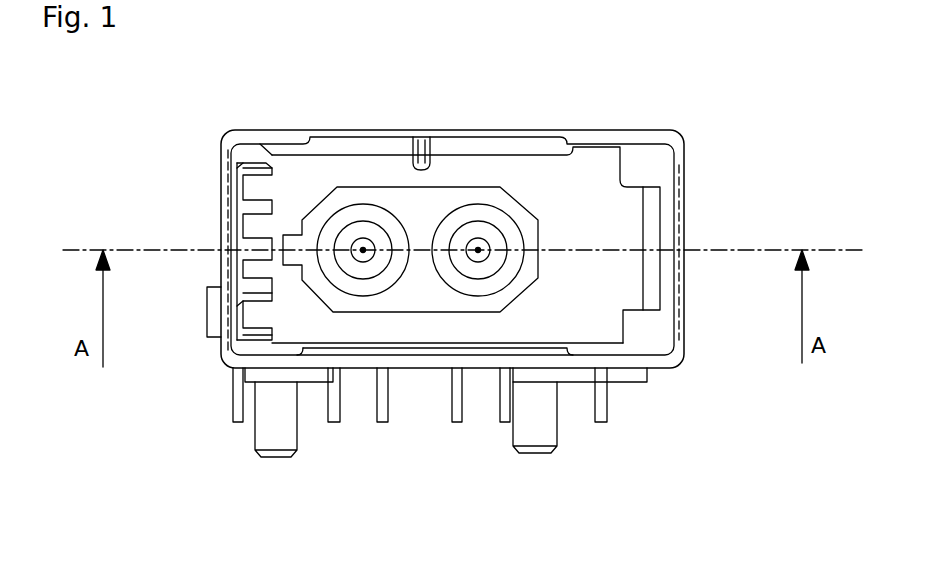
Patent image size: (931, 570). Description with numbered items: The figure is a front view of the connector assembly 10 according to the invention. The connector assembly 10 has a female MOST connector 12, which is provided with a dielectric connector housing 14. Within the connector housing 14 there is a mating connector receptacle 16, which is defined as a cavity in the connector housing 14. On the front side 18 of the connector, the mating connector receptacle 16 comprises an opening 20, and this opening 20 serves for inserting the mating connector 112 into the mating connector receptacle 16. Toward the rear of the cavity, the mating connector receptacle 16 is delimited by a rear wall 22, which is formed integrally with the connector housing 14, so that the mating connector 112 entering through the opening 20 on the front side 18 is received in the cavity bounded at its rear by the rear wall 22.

The connector assembly 10 is at (688, 423).
The female MOST connector 12 is at (683, 162).
The connector housing 14 is at (680, 213).
The mating connector receptacle 16 is at (420, 330).
The front side 18 is at (653, 335).
The opening 20 is at (640, 275).
The rear wall 22 is at (290, 183).
The mating connector 112 is at (520, 295).